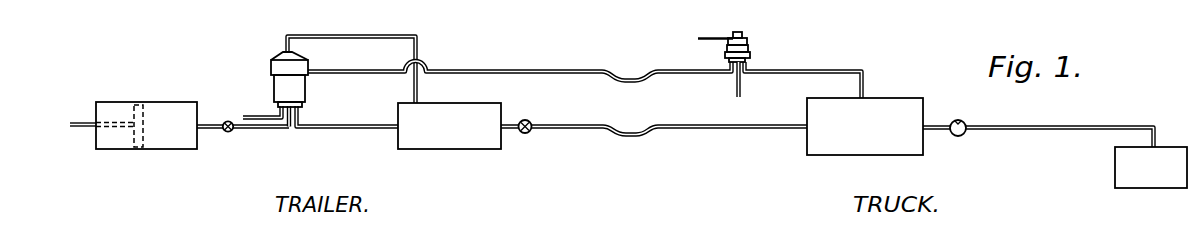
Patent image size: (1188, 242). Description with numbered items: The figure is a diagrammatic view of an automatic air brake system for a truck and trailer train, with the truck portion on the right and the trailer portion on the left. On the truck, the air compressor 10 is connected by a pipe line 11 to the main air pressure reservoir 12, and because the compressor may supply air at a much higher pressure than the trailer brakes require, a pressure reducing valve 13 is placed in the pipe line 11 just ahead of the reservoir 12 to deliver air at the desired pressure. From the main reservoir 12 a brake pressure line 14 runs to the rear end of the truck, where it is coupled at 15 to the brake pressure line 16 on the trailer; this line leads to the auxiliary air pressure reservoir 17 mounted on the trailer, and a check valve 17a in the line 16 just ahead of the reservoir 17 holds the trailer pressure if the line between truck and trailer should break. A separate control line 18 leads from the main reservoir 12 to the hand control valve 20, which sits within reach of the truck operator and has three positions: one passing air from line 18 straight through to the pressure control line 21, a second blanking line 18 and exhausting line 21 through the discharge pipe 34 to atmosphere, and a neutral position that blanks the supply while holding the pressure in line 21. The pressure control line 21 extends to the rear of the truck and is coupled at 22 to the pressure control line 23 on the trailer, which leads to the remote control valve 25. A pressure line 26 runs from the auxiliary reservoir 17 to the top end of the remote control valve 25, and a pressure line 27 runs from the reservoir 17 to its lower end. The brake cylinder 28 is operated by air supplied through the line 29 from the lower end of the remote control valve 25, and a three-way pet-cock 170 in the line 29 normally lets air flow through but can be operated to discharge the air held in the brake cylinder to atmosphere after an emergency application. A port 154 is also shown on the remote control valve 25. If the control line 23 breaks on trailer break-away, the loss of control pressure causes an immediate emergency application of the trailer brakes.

The air compressor 10 is at (1151, 167).
The pipe line 11 is at (1045, 125).
The main air pressure reservoir 12 is at (865, 126).
The pressure reducing valve 13 is at (965, 120).
The brake pressure line 14 is at (727, 129).
The coupling 15 is at (625, 129).
The brake pressure line 16 is at (570, 130).
The auxiliary air pressure reservoir 17 is at (449, 126).
The check valve 17a is at (527, 120).
The control line 18 is at (808, 71).
The hand control valve 20 is at (751, 48).
The pressure control line 21 is at (683, 70).
The coupling 22 is at (622, 72).
The pressure control line 23 is at (520, 70).
The remote control valve 25 is at (270, 66).
The pressure line 26 is at (343, 46).
The pressure line 27 is at (337, 124).
The brake cylinder 28 is at (133, 125).
The line 29 is at (217, 132).
The discharge pipe 34 is at (742, 84).
The exhaust port 154 is at (248, 116).
The three-way pet-cock 170 is at (225, 121).